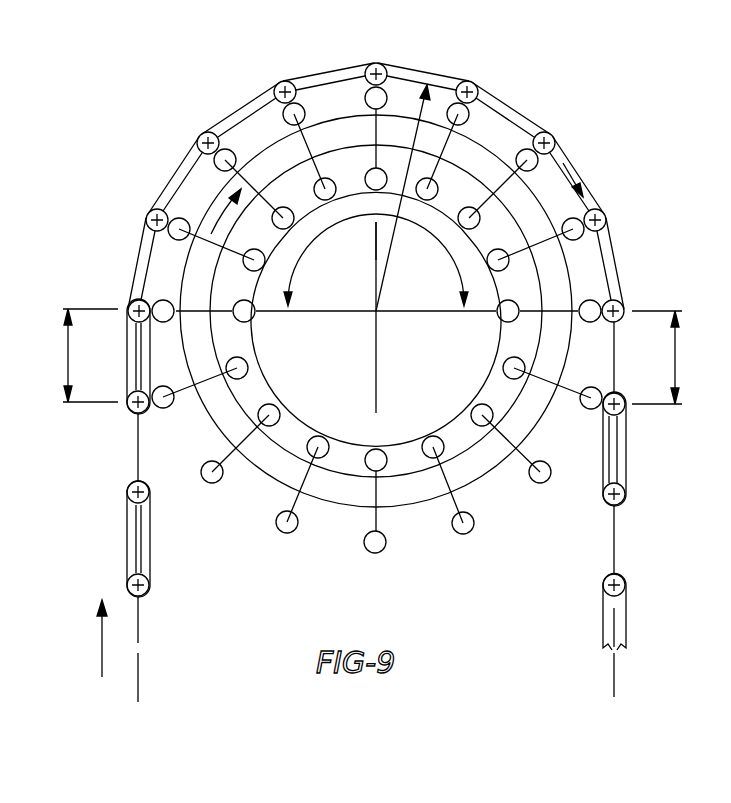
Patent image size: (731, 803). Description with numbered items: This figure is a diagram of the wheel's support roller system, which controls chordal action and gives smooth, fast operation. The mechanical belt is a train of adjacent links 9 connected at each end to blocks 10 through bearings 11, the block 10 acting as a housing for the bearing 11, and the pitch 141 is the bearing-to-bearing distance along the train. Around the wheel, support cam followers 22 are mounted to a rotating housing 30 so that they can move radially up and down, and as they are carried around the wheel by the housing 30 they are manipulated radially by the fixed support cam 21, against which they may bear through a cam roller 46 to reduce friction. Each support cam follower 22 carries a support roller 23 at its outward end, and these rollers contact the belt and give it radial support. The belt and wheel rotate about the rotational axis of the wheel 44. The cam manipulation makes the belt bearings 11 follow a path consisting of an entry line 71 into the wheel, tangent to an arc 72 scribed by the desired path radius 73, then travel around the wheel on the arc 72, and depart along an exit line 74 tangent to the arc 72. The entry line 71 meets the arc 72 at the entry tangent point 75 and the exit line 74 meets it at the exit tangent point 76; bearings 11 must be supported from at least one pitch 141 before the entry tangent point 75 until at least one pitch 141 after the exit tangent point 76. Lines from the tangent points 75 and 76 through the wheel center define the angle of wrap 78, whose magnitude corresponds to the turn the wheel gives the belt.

The link 9 is at (137, 453).
The block 10 is at (124, 548).
The bearing 11 is at (127, 493).
The fixed support cam 21 is at (450, 380).
The support cam follower 22 is at (444, 512).
The support roller 23 is at (372, 546).
The rotating housing 30 is at (342, 505).
The rotational axis of the wheel 44 is at (374, 298).
The cam roller 46 is at (326, 442).
The entry line 71 is at (138, 640).
The arc 72 is at (416, 74).
The desired path radius 73 is at (416, 139).
The exit line 74 is at (614, 544).
The entry tangent point 75 is at (130, 300).
The exit tangent point 76 is at (624, 306).
The angle of wrap 78 is at (396, 213).
The pitch 141 is at (70, 359).